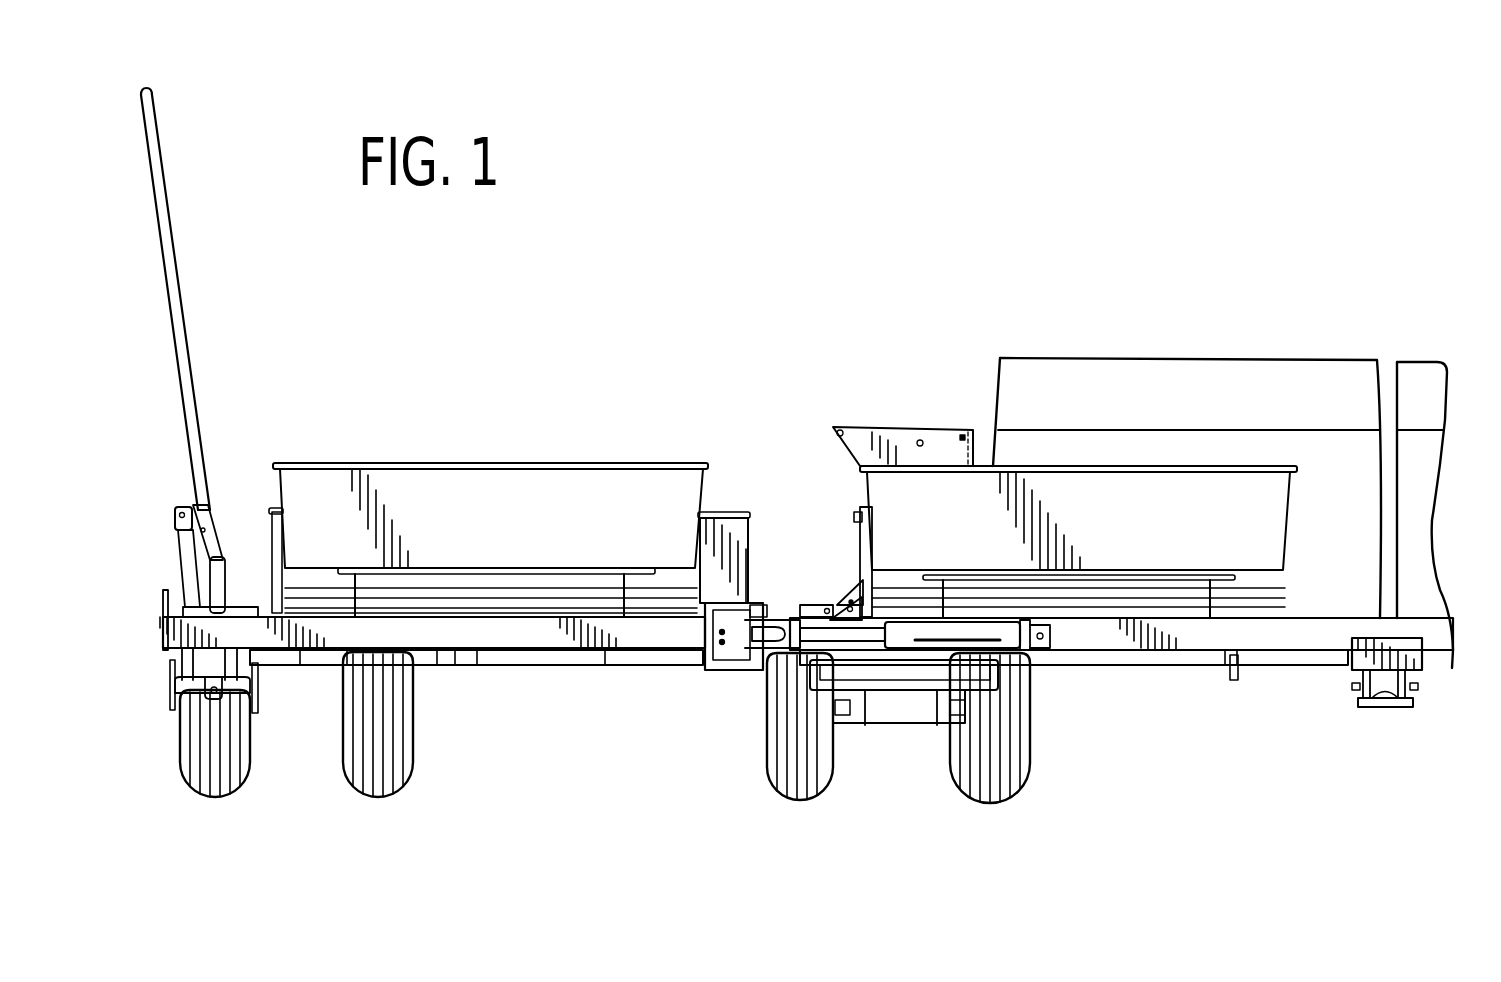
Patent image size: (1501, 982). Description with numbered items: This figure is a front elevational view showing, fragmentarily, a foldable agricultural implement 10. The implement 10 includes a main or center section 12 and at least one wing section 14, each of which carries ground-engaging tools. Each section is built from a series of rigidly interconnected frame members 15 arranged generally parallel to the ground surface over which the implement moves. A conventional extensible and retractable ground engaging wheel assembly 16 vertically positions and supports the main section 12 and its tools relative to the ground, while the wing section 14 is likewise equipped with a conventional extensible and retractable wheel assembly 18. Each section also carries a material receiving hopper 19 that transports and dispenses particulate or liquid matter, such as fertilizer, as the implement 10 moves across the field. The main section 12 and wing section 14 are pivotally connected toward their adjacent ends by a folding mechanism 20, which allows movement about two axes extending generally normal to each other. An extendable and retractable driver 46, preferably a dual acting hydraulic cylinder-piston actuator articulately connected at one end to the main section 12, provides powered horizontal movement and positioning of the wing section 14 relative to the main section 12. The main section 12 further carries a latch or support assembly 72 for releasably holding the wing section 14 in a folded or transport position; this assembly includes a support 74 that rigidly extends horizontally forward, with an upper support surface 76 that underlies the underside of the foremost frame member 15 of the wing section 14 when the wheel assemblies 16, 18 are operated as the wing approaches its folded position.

The foldable agricultural implement 10 is at (727, 318).
The main or center section 12 is at (1323, 613).
The wing section 14 is at (558, 652).
The frame members 15 is at (622, 636).
The ground engaging wheel assemblies 16 is at (1033, 752).
The wheel assembly 18 is at (256, 752).
The material receiving hopper 19 is at (510, 538).
The folding mechanism 20 is at (766, 592).
The extendable and retractable driver 46 is at (992, 648).
The latch or support assembly 72 is at (1347, 686).
The support 74 is at (1378, 700).
The upper support surface 76 is at (1452, 625).